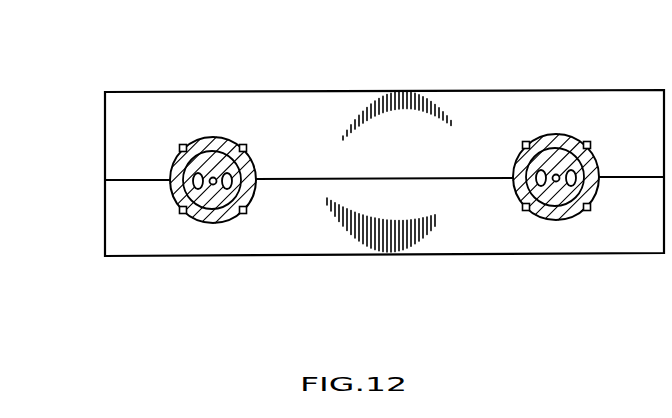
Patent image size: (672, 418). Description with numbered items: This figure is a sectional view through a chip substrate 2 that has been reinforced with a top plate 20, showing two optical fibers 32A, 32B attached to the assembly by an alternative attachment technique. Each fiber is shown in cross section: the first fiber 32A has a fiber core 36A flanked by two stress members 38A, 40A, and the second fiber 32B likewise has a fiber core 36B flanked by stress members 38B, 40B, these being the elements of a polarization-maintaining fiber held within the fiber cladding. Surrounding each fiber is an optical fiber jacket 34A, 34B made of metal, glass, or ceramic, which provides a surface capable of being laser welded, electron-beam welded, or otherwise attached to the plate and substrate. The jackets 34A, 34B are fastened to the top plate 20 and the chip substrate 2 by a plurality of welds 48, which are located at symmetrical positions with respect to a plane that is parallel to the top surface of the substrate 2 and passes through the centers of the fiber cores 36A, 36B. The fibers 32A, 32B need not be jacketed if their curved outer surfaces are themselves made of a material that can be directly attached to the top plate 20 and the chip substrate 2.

The top plate 20 is at (318, 122).
The chip substrate 2 is at (417, 227).
The optical fiber 32A is at (200, 162).
The optical fiber 32B is at (539, 148).
The optical fiber jacket 34A is at (210, 220).
The optical fiber jacket 34B is at (553, 219).
The fiber core 36A is at (214, 185).
The fiber core 36B is at (558, 182).
The stress member 38A is at (194, 188).
The stress member 38B is at (537, 185).
The stress member 40A is at (230, 186).
The stress member 40B is at (574, 184).
The welds 48 is at (181, 145).